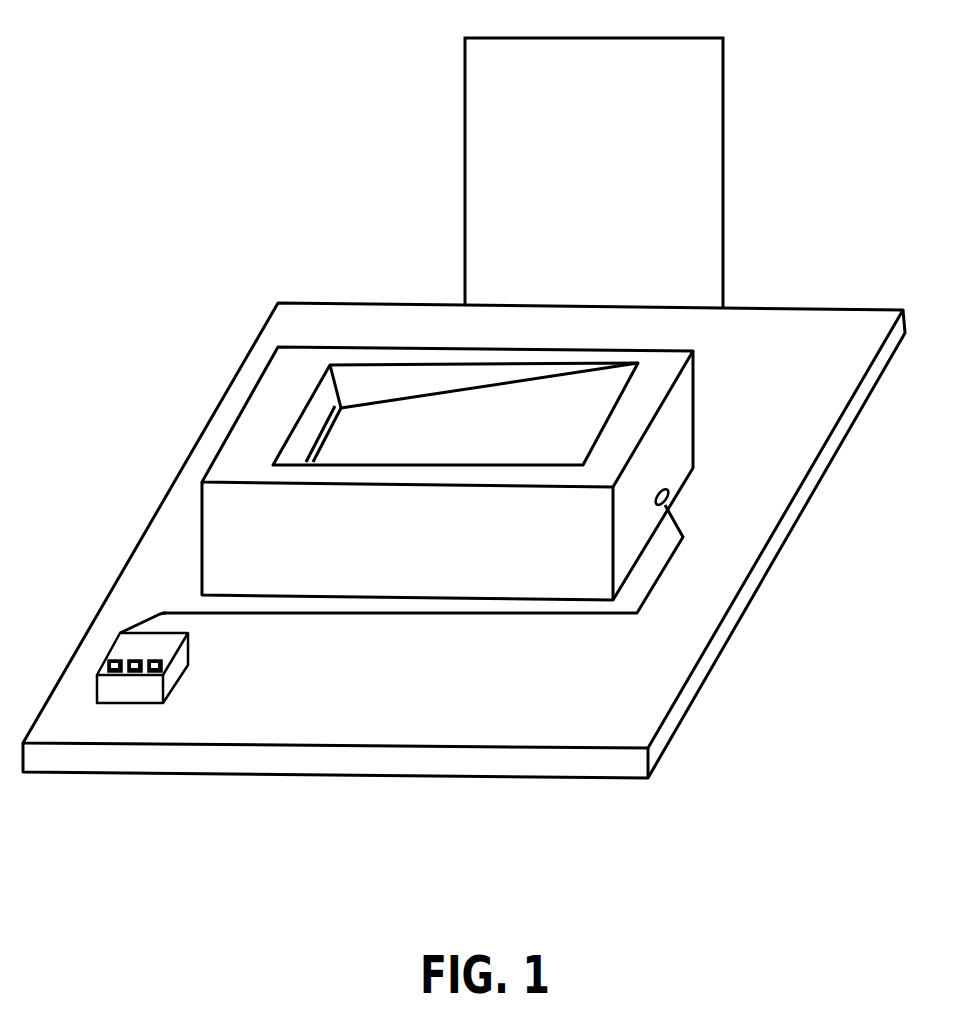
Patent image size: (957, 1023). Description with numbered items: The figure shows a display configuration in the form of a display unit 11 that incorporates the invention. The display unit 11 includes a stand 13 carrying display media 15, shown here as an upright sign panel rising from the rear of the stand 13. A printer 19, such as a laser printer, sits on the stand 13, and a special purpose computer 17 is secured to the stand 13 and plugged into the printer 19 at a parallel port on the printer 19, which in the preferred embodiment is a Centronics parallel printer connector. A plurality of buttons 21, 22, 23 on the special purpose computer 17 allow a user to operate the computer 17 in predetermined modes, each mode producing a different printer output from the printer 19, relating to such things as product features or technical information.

The display unit 11 is at (330, 790).
The stand 13 is at (405, 667).
The display media 15 is at (700, 149).
The special purpose computer 17 is at (142, 613).
The printer 19 is at (412, 545).
The button 21 is at (108, 662).
The button 22 is at (128, 660).
The button 23 is at (153, 660).